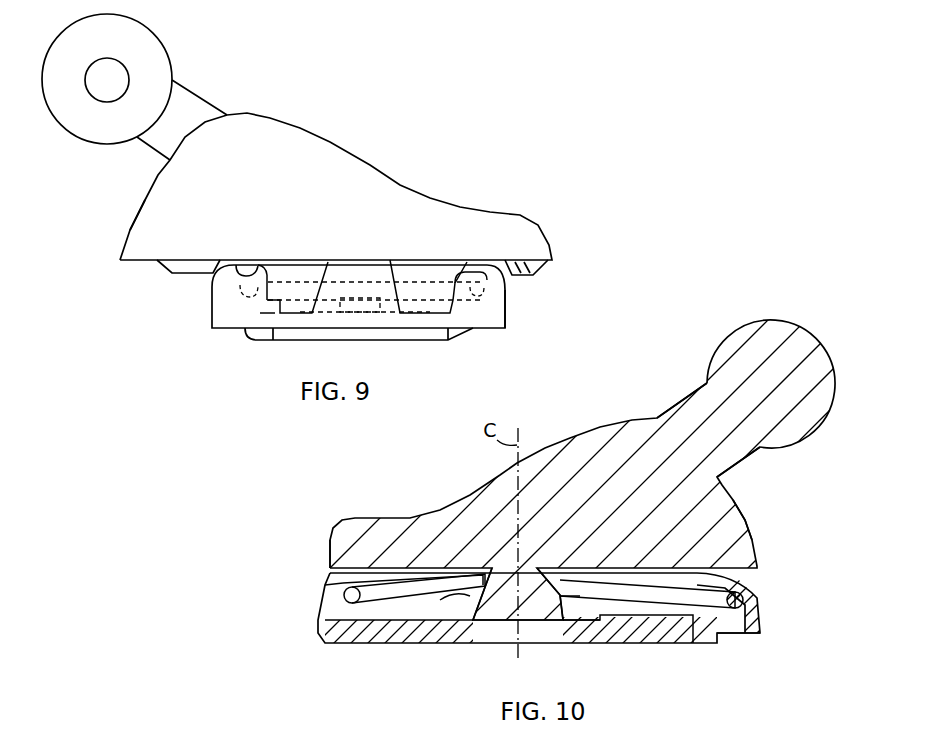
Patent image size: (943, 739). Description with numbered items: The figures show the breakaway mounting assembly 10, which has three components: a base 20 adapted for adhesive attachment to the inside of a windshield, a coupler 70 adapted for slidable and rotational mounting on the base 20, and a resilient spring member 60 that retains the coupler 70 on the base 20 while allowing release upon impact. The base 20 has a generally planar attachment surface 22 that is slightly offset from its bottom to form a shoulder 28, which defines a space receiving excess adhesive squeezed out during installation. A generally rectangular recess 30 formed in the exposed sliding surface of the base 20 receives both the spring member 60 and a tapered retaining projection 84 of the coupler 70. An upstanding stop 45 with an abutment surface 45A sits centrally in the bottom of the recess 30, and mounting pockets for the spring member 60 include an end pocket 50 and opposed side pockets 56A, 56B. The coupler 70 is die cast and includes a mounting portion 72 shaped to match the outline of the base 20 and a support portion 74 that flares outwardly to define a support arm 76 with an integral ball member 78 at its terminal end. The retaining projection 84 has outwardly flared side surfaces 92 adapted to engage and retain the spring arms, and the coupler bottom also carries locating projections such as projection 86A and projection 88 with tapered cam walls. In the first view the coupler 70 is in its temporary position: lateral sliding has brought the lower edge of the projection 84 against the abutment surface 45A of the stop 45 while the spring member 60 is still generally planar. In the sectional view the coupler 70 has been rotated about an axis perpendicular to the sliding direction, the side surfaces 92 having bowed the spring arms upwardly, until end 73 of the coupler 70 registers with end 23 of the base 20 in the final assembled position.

In FIG. 9, the breakaway mounting assembly 10 is at (466, 136).
In FIG. 10, the breakaway mounting assembly 10 is at (379, 478).
In FIG. 9, the base 20 is at (512, 306).
In FIG. 10, the base 20 is at (767, 582).
In FIG. 9, the attachment surface 22 is at (418, 341).
In FIG. 10, the end of base 23 is at (762, 618).
In FIG. 9, the shoulder 28 is at (487, 331).
In FIG. 9, the recess 30 is at (272, 312).
In FIG. 10, the stop 45 is at (617, 619).
In FIG. 10, the abutment surface 45A is at (561, 630).
In FIG. 10, the end pocket 50 is at (738, 634).
In FIG. 9, the side pocket 56A is at (246, 268).
In FIG. 10, the side pocket 56A is at (373, 606).
In FIG. 9, the side pocket 56B is at (472, 272).
In FIG. 9, the spring member 60 is at (420, 279).
In FIG. 10, the spring member 60 is at (399, 574).
In FIG. 9, the coupler 70 is at (308, 113).
In FIG. 10, the coupler 70 is at (630, 421).
In FIG. 9, the mounting portion 72 is at (445, 221).
In FIG. 9, the end of coupler 73 is at (134, 222).
In FIG. 10, the end of coupler 73 is at (752, 536).
In FIG. 9, the support portion 74 is at (245, 153).
In FIG. 9, the support arm 76 is at (195, 104).
In FIG. 10, the support arm 76 is at (731, 454).
In FIG. 9, the ball member 78 is at (165, 64).
In FIG. 10, the ball member 78 is at (795, 345).
In FIG. 9, the retaining projection 84 is at (308, 293).
In FIG. 10, the retaining projection 84 is at (503, 613).
In FIG. 9, the locating projection 86A is at (172, 273).
In FIG. 9, the locating projection 88 is at (546, 268).
In FIG. 10, the locating projection 88 is at (330, 572).
In FIG. 9, the side surfaces 92 is at (312, 262).
In FIG. 10, the side surfaces 92 is at (462, 606).